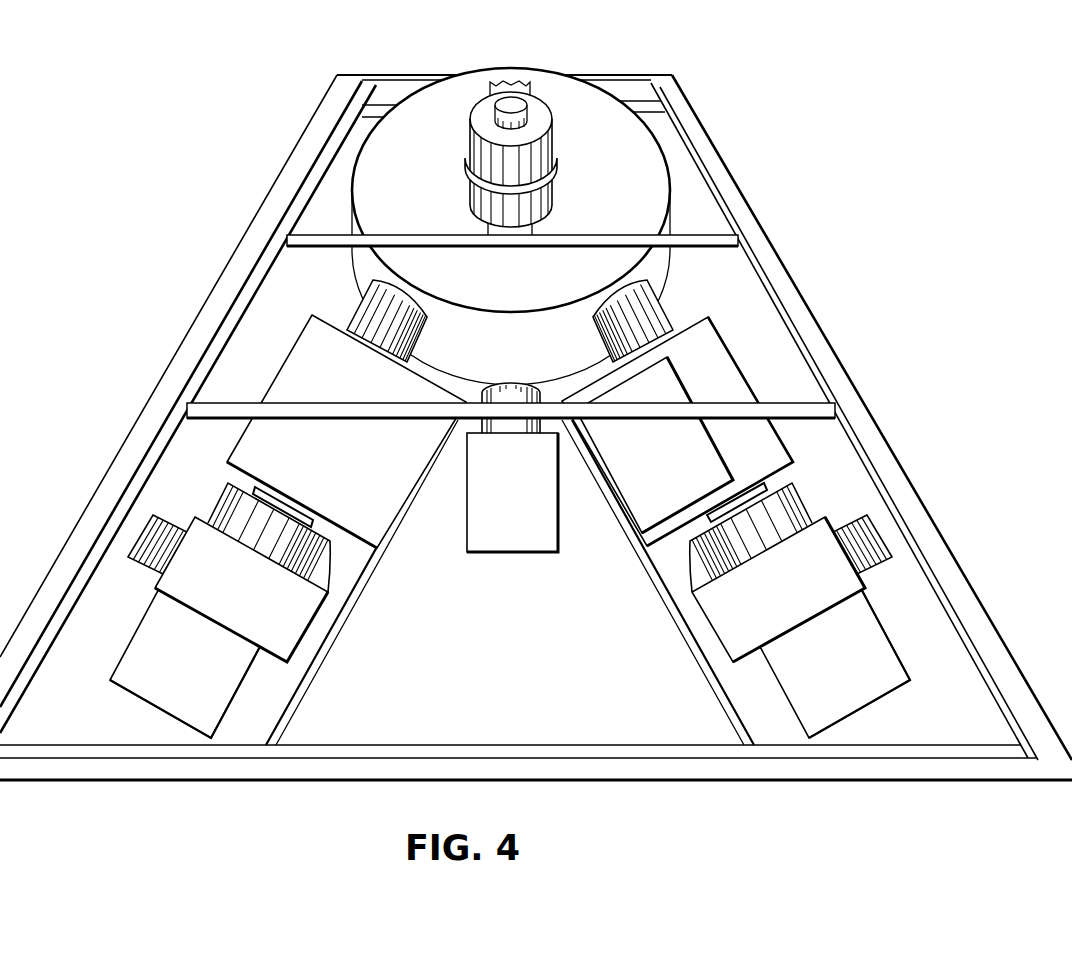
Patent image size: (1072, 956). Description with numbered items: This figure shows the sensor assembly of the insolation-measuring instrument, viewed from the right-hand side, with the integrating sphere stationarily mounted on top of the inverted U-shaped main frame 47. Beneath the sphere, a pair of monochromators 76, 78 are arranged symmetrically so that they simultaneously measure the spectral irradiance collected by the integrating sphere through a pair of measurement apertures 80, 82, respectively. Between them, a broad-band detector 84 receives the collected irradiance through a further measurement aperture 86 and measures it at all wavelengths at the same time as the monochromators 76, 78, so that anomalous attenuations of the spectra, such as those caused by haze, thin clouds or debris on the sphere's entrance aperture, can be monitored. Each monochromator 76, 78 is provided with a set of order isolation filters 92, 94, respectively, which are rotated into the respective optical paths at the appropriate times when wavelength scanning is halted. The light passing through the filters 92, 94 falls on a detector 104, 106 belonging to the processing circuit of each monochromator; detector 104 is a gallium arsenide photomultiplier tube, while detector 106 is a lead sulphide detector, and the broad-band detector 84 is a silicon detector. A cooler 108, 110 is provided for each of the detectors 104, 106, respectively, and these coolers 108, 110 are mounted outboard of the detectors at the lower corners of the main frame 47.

The main frame 47 is at (150, 421).
The monochromator 76 is at (357, 475).
The monochromator 78 is at (659, 473).
The measurement aperture 80 is at (426, 331).
The measurement aperture 82 is at (602, 322).
The broad-band detector 84 is at (515, 475).
The measurement aperture 86 is at (513, 383).
The order isolation filters 92 is at (264, 543).
The order isolation filters 94 is at (761, 544).
The detector 104 is at (176, 523).
The detector 106 is at (859, 518).
The cooler 108 is at (192, 673).
The cooler 110 is at (836, 673).